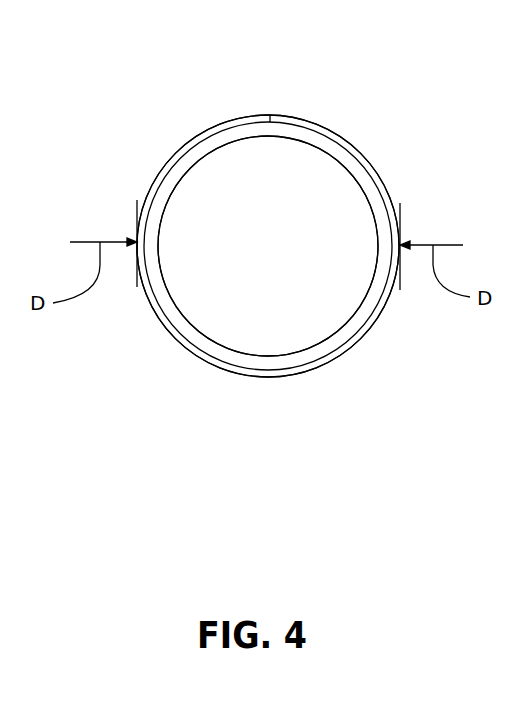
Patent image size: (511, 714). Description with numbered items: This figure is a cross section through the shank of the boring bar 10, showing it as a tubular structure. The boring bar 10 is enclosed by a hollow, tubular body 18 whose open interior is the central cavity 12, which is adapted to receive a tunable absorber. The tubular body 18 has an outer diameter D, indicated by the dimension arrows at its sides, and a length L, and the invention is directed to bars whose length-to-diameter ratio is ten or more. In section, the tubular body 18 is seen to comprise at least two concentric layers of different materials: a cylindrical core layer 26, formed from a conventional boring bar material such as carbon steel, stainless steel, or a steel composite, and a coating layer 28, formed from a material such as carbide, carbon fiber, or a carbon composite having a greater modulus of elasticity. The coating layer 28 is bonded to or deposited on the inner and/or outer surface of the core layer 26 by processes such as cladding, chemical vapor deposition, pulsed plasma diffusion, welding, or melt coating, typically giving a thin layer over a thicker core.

The boring bar 10 is at (318, 80).
The central cavity 12 is at (207, 182).
The tubular body 18 is at (382, 312).
The core layer 26 is at (372, 193).
The coating layer 28 is at (153, 313).